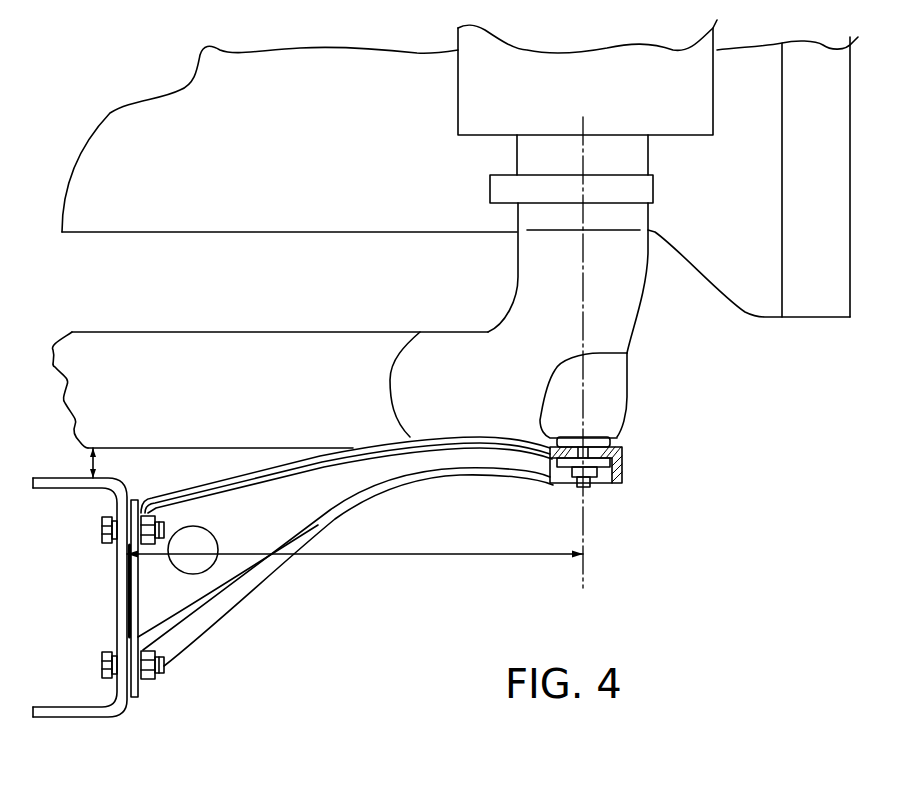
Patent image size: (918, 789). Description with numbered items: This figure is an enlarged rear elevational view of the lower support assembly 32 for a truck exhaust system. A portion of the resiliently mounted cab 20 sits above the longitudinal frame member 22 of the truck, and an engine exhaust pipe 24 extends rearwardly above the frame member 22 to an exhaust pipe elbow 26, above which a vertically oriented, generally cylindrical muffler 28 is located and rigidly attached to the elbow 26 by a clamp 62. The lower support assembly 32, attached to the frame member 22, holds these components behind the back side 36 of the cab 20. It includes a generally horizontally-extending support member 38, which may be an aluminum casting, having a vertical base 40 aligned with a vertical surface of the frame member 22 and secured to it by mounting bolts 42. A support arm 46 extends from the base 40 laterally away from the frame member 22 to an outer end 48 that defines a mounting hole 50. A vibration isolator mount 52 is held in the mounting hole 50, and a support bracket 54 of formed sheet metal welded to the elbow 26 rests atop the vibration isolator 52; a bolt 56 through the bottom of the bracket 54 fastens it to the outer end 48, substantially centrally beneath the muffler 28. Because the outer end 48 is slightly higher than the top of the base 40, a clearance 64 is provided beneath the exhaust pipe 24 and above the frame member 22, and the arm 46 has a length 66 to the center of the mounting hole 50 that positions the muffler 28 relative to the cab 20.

The cab 20 is at (833, 98).
The frame member 22 is at (73, 717).
The exhaust pipe 24 is at (205, 340).
The exhaust pipe elbow 26 is at (622, 315).
The muffler 28 is at (697, 98).
The lower support assembly 32 is at (492, 597).
The back side of the cab 36 is at (332, 150).
The support member 38 is at (252, 593).
The base 40 is at (133, 677).
The mounting bolts 42 is at (167, 668).
The support arm 46 is at (357, 490).
The outer end 48 is at (622, 463).
The mounting hole 50 is at (593, 447).
The vibration isolator mount 52 is at (612, 440).
The support bracket 54 is at (610, 372).
The bolt 56 is at (592, 482).
The clamp 62 is at (643, 190).
The clearance 64 is at (92, 463).
The length 66 is at (460, 552).